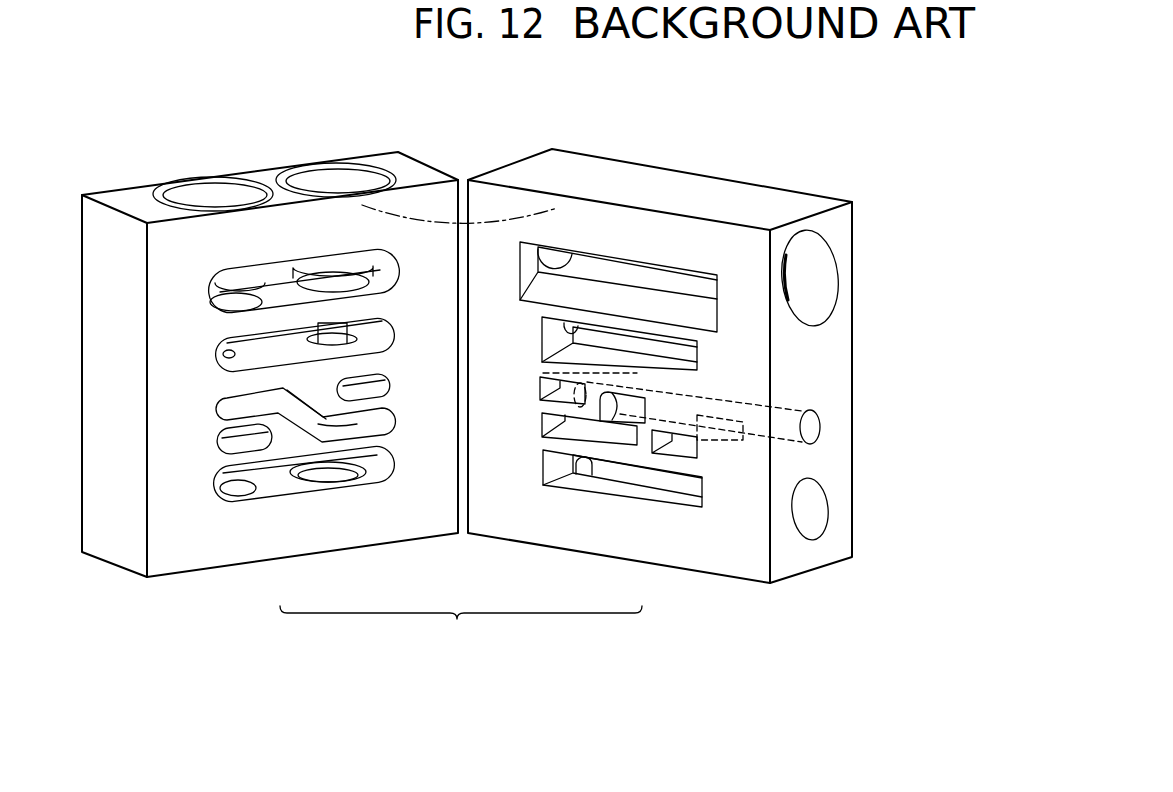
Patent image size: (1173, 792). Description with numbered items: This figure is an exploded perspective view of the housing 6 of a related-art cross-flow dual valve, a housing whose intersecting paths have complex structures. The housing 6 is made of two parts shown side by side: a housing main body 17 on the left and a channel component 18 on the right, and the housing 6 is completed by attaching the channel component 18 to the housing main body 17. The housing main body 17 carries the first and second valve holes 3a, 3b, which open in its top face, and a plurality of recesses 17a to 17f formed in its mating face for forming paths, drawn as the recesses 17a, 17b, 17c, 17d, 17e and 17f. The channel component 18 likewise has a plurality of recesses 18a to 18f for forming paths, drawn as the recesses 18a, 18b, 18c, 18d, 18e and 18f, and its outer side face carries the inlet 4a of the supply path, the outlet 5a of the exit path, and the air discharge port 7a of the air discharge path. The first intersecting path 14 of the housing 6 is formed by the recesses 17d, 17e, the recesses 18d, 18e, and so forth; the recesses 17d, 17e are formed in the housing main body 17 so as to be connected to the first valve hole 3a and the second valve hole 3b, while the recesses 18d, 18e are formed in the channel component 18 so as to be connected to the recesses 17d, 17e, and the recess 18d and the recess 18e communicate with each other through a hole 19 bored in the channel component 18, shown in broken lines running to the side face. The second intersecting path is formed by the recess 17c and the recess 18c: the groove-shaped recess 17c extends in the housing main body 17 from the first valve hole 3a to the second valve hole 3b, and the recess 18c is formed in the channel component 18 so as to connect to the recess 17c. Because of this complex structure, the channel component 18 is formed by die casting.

The housing 6 is at (518, 117).
The housing main body 17 is at (407, 171).
The channel component 18 is at (540, 176).
The recess 17a is at (310, 290).
The recess 17b is at (268, 350).
The recess 17c is at (228, 413).
The recess 17d is at (373, 392).
The recess 17e is at (261, 443).
The recess 17f is at (263, 485).
The recess 18a is at (628, 297).
The recess 18b is at (675, 368).
The recess 18c is at (677, 407).
The recess 18d is at (548, 378).
The recess 18e is at (673, 445).
The recess 18f is at (680, 500).
The first intersecting path 14 is at (461, 631).
The first valve hole 3a is at (230, 350).
The second valve hole 3b is at (352, 336).
The outlet 5a is at (553, 325).
The air discharge port 7a is at (822, 284).
The inlet 4a is at (808, 522).
The hole 19 is at (810, 427).